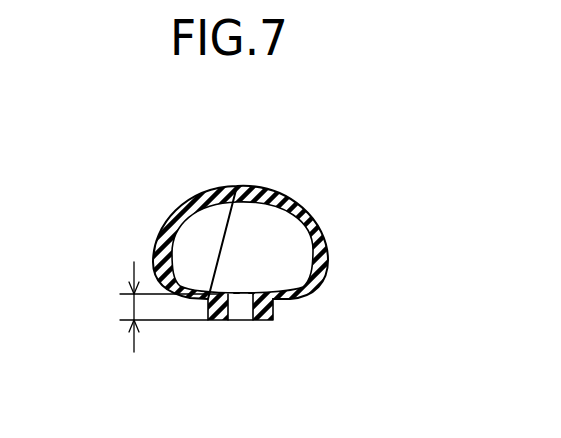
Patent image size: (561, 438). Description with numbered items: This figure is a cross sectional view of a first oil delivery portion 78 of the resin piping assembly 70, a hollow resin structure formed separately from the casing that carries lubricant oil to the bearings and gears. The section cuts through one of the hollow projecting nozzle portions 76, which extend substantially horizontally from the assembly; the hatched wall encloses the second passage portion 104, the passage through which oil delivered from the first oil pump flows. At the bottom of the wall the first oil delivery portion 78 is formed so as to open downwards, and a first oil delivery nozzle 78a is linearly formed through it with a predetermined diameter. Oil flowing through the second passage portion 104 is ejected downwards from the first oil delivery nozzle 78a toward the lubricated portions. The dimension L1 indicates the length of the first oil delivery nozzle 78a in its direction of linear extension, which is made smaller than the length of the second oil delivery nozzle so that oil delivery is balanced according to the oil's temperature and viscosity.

The resin piping assembly 70 is at (240, 245).
The projecting nozzle portion 76 is at (253, 195).
The first oil delivery portion 78 is at (263, 312).
The first oil delivery nozzle 78a is at (237, 321).
The second passage portion 104 is at (235, 249).
The length of the first oil delivery nozzle L1 is at (156, 307).